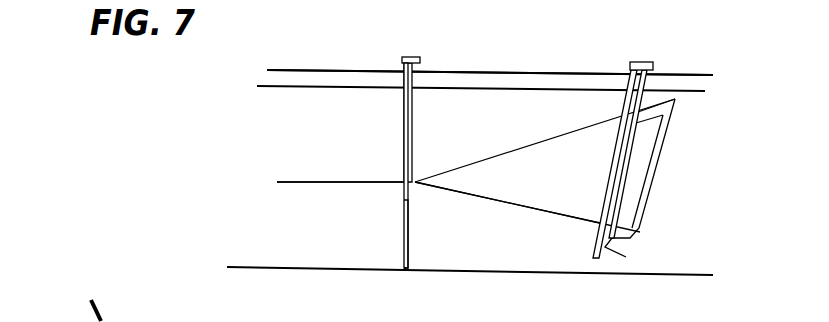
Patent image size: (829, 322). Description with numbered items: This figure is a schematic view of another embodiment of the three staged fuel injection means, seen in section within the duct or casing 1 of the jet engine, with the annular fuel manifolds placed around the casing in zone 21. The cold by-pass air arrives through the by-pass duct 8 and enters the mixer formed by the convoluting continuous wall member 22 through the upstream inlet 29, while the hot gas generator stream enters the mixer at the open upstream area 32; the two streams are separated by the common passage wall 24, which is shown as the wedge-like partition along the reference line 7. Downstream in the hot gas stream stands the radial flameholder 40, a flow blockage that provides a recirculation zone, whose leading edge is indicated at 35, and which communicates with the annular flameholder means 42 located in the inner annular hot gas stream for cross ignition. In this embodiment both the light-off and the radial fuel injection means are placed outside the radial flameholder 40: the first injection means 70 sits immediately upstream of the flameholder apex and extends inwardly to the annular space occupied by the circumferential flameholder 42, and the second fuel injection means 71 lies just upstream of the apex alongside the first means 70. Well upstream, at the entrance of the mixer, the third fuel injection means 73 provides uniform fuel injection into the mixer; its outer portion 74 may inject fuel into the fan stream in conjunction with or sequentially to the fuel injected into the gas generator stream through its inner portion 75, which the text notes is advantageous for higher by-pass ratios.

The duct or casing 1 is at (545, 65).
The center line 7 is at (373, 182).
The by-pass duct 8 is at (279, 145).
The zone 21 is at (497, 210).
The continuous wall member 22 is at (682, 63).
The common passage wall 24 is at (545, 165).
The upstream inlet 29 is at (516, 126).
The open upstream area 32 is at (543, 240).
The plate edge 35 is at (672, 128).
The radial flameholder 40 is at (658, 198).
The annular flameholder means 42 is at (633, 252).
The first injection means 70 is at (628, 148).
The second fuel injection means 71 is at (613, 141).
The third fuel injection means 73 is at (409, 214).
The outer portion 74 is at (413, 120).
The inner portion 75 is at (403, 235).